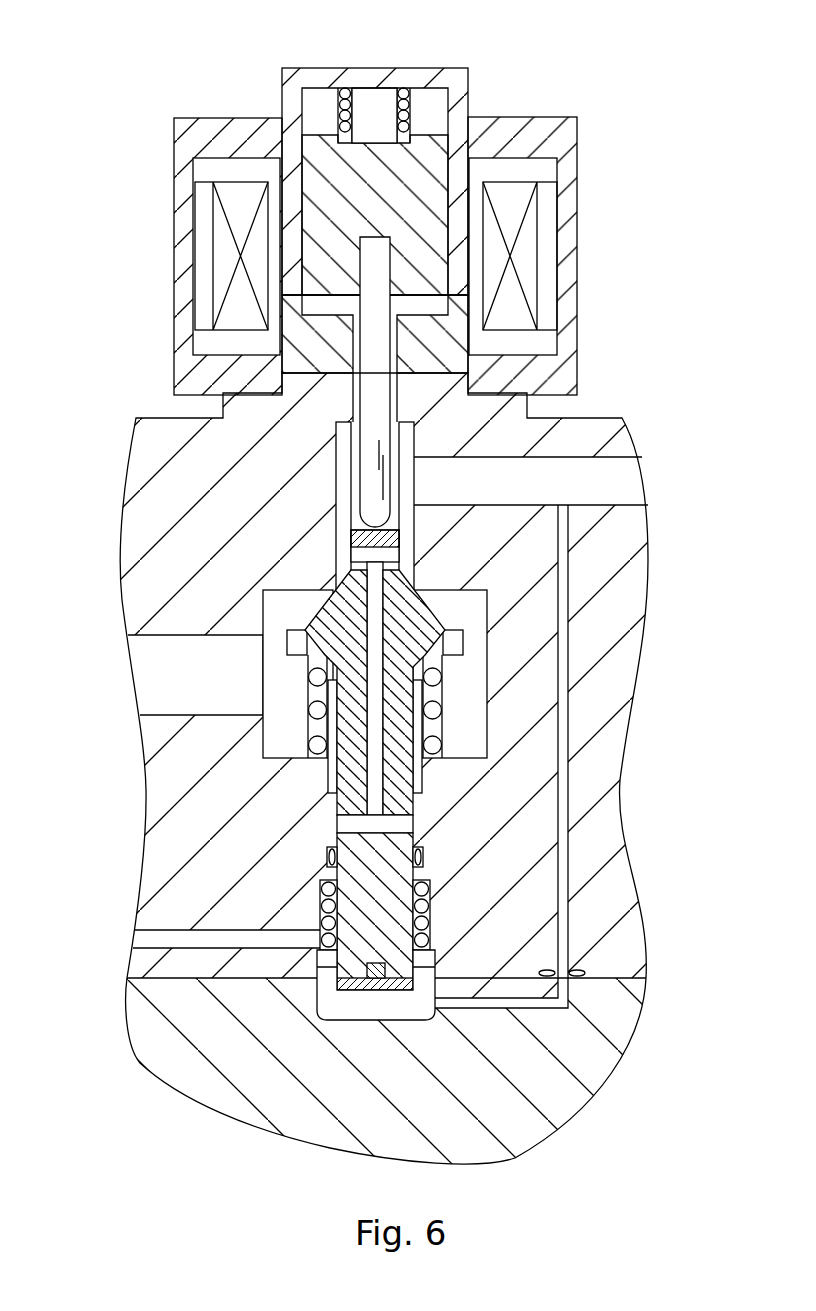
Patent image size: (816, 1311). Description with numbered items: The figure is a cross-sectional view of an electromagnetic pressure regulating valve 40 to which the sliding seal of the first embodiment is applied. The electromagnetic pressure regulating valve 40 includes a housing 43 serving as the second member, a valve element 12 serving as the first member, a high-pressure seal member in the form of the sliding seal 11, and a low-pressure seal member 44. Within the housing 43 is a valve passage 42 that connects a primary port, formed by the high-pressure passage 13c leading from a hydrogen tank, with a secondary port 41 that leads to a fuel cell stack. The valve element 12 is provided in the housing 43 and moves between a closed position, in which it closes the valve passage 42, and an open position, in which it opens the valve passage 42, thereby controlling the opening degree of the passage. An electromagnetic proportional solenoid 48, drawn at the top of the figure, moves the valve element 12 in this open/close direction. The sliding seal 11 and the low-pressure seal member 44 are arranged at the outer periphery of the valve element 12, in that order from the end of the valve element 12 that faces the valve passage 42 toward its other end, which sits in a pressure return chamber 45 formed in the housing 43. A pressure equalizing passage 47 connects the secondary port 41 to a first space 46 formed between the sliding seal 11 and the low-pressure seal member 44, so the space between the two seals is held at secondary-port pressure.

The electromagnetic pressure regulating valve 40 is at (672, 125).
The electromagnetic proportional solenoid 48 is at (600, 98).
The housing 43 is at (143, 453).
The valve passage 42 is at (345, 475).
The secondary port 41 is at (628, 480).
The valve element 12 is at (324, 635).
The high-pressure passage 13c is at (143, 685).
The sliding seal 11 is at (333, 776).
The first space 46 is at (337, 830).
The low-pressure seal member 44 is at (327, 860).
The pressure equalizing passage 47 is at (378, 834).
The pressure return chamber 45 is at (412, 1007).